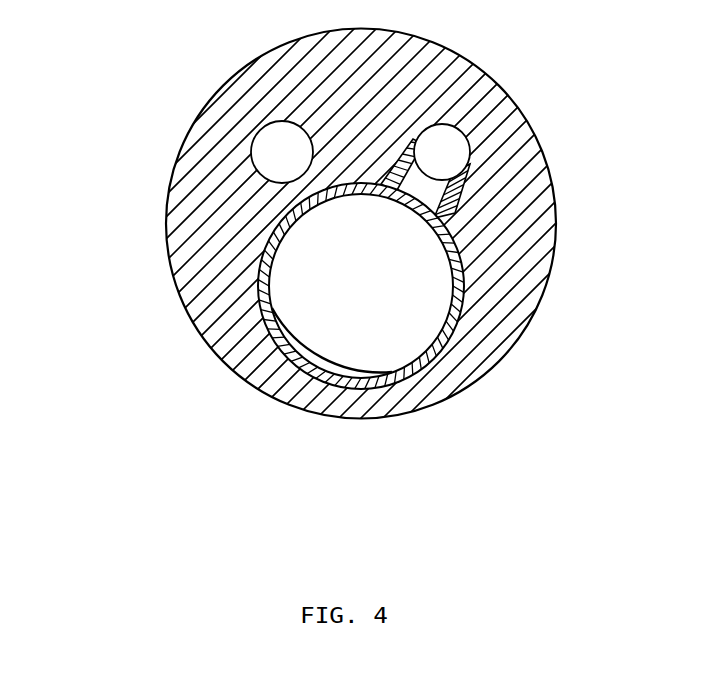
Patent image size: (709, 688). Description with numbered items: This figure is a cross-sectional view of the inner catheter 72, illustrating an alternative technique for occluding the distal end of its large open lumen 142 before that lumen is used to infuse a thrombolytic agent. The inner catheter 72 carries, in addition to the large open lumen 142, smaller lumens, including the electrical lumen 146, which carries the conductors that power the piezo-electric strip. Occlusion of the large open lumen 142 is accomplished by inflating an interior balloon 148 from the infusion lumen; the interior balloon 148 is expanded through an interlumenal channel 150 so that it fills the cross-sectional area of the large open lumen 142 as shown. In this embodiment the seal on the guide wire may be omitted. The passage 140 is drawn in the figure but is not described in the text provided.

The inner catheter 72 is at (557, 262).
The side lumen tube 140 is at (423, 136).
The large open lumen 142 is at (418, 375).
The electrical lumen 146 is at (256, 154).
The interior balloon 148 is at (450, 246).
The interlumenal channel 150 is at (420, 185).